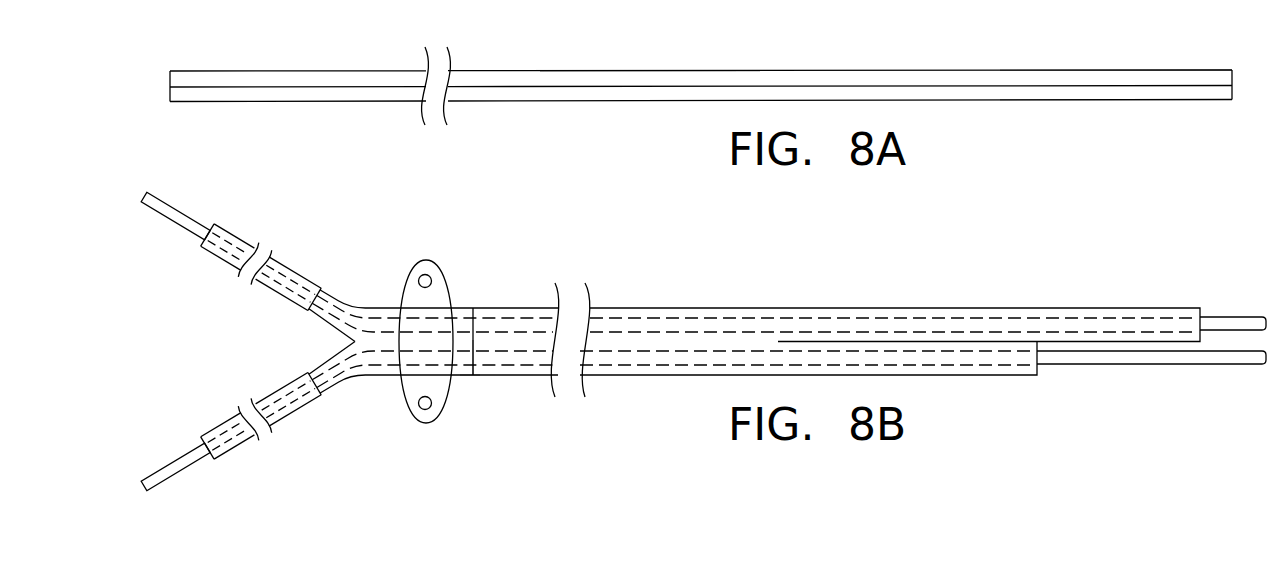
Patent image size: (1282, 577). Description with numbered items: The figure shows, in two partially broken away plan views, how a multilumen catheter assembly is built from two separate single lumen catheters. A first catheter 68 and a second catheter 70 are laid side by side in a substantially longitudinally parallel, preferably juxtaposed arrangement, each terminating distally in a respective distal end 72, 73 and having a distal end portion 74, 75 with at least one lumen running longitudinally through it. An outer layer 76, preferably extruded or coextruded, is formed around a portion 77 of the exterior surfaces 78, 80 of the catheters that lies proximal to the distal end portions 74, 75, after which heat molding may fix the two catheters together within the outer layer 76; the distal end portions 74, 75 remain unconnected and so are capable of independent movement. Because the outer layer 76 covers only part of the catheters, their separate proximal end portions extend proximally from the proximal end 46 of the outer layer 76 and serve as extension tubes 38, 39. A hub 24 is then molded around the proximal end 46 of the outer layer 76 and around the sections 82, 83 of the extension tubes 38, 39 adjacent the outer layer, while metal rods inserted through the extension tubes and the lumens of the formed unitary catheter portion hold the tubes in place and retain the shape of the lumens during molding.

In FIG. 8B, the suture wing 24 is at (432, 421).
In FIG. 8B, the extension tube 38 is at (312, 405).
In FIG. 8B, the extension tube 39 is at (309, 277).
In FIG. 8B, the proximal end of the outer layer 46 is at (473, 360).
In FIG. 8A, the first catheter 68 is at (562, 93).
In FIG. 8A, the second catheter 70 is at (586, 78).
In FIG. 8A, the distal end 72 is at (705, 134).
In FIG. 8A, the distal end 73 is at (705, 51).
In FIG. 8A, the distal end portion 74 is at (1160, 102).
In FIG. 8A, the distal end portion 75 is at (1142, 67).
In FIG. 8B, the outer layer 76 is at (637, 374).
In FIG. 8B, the portion of the exterior surfaces 77 is at (860, 308).
In FIG. 8A, the exterior surface 78 is at (675, 93).
In FIG. 8A, the exterior surface 80 is at (698, 78).
In FIG. 8B, the section of the proximal end portion 82 is at (510, 437).
In FIG. 8B, the section of the proximal end portion 83 is at (472, 308).